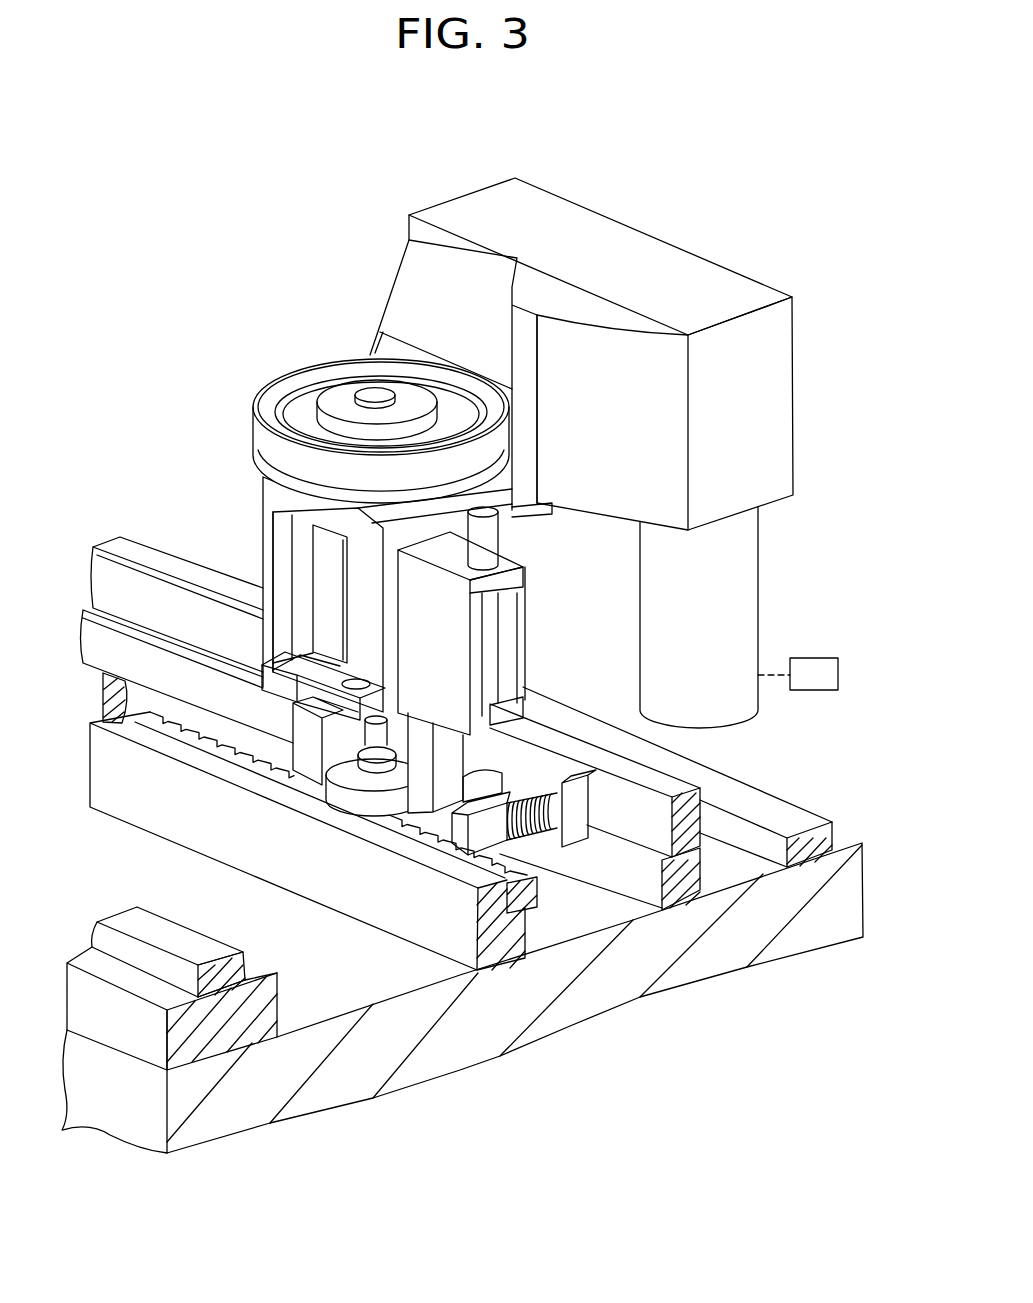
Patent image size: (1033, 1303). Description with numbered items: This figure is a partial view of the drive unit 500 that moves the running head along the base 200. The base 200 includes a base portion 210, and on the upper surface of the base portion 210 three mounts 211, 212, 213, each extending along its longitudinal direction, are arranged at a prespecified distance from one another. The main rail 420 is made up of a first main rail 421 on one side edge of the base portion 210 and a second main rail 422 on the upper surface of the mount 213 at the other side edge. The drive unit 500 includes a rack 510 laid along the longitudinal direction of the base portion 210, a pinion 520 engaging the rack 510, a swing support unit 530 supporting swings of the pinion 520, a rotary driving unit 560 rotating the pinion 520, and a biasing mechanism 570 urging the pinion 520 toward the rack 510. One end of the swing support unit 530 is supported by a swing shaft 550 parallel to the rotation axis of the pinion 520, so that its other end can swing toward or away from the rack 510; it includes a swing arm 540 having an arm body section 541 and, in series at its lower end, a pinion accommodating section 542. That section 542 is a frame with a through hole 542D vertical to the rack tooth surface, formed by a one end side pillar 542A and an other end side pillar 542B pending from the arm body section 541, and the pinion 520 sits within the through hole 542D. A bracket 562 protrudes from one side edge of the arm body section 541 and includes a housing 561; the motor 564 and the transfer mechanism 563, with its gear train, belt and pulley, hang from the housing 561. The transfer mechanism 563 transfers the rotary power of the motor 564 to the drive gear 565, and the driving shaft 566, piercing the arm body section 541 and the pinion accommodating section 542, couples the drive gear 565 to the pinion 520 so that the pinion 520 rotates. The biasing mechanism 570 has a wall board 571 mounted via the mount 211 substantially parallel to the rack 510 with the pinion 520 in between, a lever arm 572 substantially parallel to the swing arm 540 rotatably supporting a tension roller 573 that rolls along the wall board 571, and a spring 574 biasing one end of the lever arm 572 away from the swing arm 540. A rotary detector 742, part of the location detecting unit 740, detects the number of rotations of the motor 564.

The base 200 is at (627, 1012).
The base portion 210 is at (487, 1050).
The mount 211 is at (668, 878).
The mount 212 is at (478, 934).
The mount 213 is at (268, 1006).
The main rail 420 is at (455, 878).
The first main rail 421 is at (816, 830).
The second main rail 422 is at (260, 968).
The drive unit 500 is at (617, 197).
The rack 510 is at (492, 900).
The pinion 520 is at (344, 798).
The swing support unit 530 is at (168, 457).
The swing arm 540 is at (170, 485).
The arm body section 541 is at (265, 493).
The pinion accommodating section 542 is at (293, 707).
The one end side pillar 542A is at (423, 808).
The other end side pillar 542B is at (300, 742).
The through hole 542D is at (331, 737).
The swing shaft 550 is at (492, 533).
The rotary driving unit 560 is at (315, 280).
The housing 561 is at (670, 258).
The bracket 562 is at (526, 546).
The transfer mechanism 563 is at (755, 406).
The motor 564 is at (744, 556).
The drive gear 565 is at (288, 370).
The driving shaft 566 is at (368, 612).
The biasing mechanism 570 is at (596, 800).
The wall board 571 is at (700, 795).
The lever arm 572 is at (577, 786).
The tension roller 573 is at (497, 785).
The spring 574 is at (537, 838).
The sensor unit 740 is at (817, 648).
The rotary detector 742 is at (817, 658).